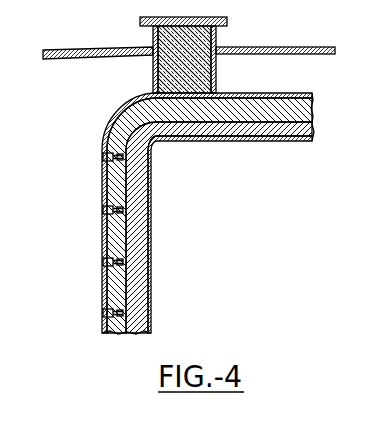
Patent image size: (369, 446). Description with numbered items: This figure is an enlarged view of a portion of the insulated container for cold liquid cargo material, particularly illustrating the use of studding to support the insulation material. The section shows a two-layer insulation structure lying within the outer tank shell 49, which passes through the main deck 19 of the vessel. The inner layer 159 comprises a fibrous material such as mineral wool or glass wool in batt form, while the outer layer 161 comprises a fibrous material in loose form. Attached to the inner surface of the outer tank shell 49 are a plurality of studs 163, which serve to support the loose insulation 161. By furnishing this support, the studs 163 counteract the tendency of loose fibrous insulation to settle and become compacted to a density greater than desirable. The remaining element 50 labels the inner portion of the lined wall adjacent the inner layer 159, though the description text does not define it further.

The main deck 19 is at (285, 44).
The outer tank shell 49 is at (103, 178).
The inner wall of conduit 50 is at (246, 141).
The outer layer 161 is at (113, 232).
The inner layer 159 is at (141, 283).
The studs 163 is at (105, 262).